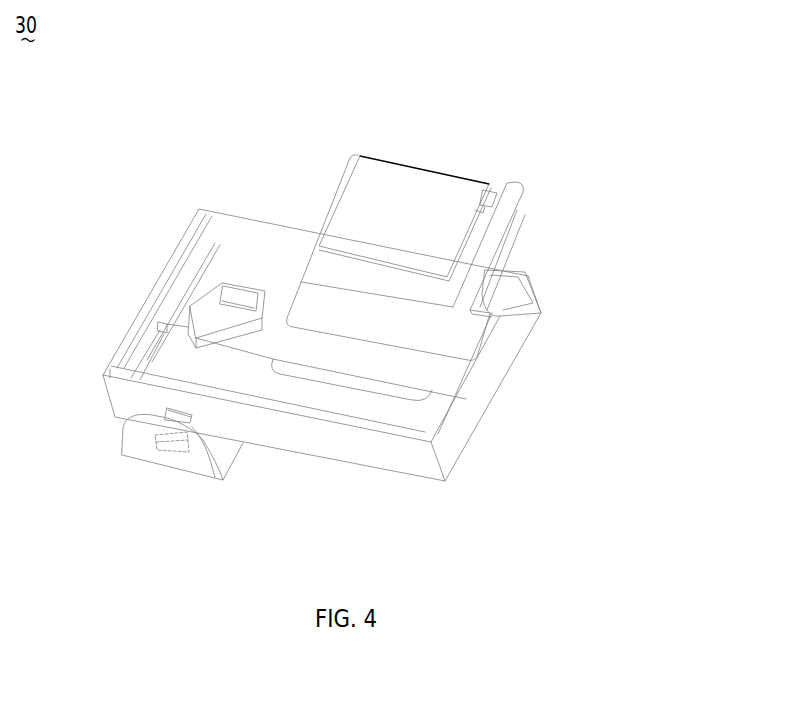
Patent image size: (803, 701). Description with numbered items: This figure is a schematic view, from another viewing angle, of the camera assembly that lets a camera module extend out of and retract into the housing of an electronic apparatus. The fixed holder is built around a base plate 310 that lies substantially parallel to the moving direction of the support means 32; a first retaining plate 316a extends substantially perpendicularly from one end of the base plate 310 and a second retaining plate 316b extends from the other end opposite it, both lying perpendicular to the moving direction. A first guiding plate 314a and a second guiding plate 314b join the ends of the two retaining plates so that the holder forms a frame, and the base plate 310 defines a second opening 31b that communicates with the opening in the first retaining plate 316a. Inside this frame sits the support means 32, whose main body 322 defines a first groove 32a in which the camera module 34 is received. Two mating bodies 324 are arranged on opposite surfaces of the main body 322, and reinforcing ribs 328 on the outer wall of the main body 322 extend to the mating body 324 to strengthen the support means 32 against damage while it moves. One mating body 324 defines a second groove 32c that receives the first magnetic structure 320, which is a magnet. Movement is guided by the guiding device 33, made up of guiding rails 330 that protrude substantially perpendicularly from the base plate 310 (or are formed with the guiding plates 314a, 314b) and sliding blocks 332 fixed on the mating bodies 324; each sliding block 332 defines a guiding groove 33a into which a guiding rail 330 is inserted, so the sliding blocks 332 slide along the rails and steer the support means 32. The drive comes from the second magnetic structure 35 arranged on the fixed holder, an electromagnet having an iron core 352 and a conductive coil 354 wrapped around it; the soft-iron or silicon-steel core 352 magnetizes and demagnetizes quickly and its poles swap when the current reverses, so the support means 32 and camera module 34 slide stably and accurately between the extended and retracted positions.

The base plate 310 is at (420, 423).
The first guiding plate 314a is at (123, 362).
The second guiding plate 314b is at (472, 395).
The first retaining plate 316a is at (500, 292).
The second retaining plate 316b is at (272, 430).
The second opening 31b is at (365, 382).
The support means 32 is at (377, 252).
The main body 322 is at (343, 187).
The mating body 324 is at (472, 338).
The reinforcing rib 328 is at (515, 222).
The first groove 32a is at (495, 188).
The second groove 32c is at (243, 287).
The first magnetic structure 320 is at (233, 300).
The guiding device 33 is at (129, 309).
The guiding rail 330 is at (163, 303).
The sliding block 332 is at (193, 280).
The guiding groove 33a is at (160, 327).
The camera module 34 is at (395, 187).
The second magnetic structure 35 is at (182, 496).
The iron core 352 is at (190, 452).
The conductive coil 354 is at (173, 448).